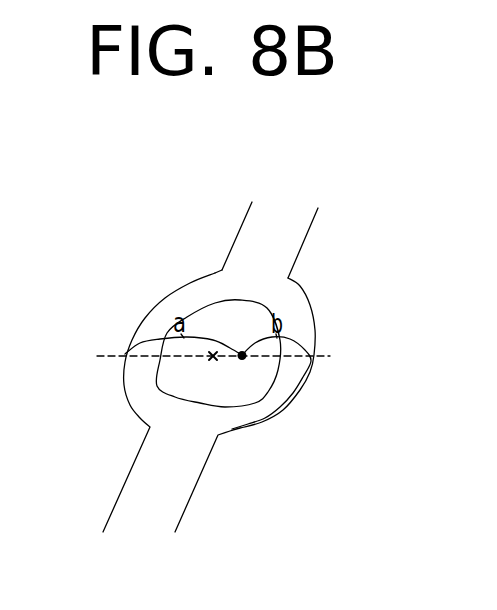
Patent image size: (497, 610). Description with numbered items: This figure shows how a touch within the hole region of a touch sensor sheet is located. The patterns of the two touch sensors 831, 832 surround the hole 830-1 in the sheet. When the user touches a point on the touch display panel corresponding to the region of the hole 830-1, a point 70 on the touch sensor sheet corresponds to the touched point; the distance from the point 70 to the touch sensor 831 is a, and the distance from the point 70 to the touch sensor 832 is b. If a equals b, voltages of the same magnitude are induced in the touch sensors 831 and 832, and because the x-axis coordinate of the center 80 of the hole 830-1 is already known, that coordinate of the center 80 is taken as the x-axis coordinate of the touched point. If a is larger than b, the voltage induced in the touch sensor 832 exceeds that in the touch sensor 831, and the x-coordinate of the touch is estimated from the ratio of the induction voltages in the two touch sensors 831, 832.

The touch sensor 831 is at (241, 227).
The touch sensor 832 is at (304, 242).
The hole 830-1 is at (157, 386).
The point 70 is at (242, 360).
The center 80 is at (213, 360).